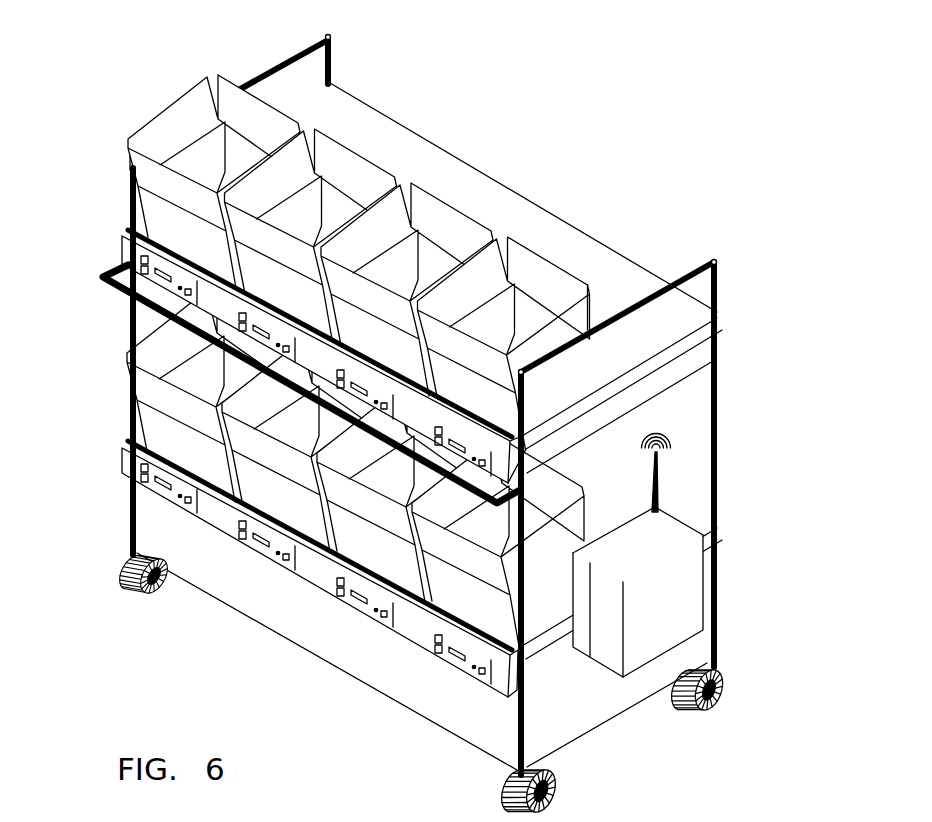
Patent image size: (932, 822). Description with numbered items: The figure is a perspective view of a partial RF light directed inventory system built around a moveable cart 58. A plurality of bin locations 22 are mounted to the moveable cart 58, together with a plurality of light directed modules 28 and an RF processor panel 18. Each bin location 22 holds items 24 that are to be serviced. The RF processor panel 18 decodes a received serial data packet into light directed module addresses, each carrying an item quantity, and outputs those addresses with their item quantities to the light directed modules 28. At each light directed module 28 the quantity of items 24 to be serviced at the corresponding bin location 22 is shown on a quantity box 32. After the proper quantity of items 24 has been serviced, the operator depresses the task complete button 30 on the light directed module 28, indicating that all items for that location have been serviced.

The RF processor panel 18 is at (663, 597).
The bin locations 22 is at (377, 375).
The items 24 is at (589, 287).
The light directed modules 28 is at (168, 302).
The task complete button 30 is at (127, 140).
The quantity box 32 is at (128, 232).
The moveable cart 58 is at (718, 388).